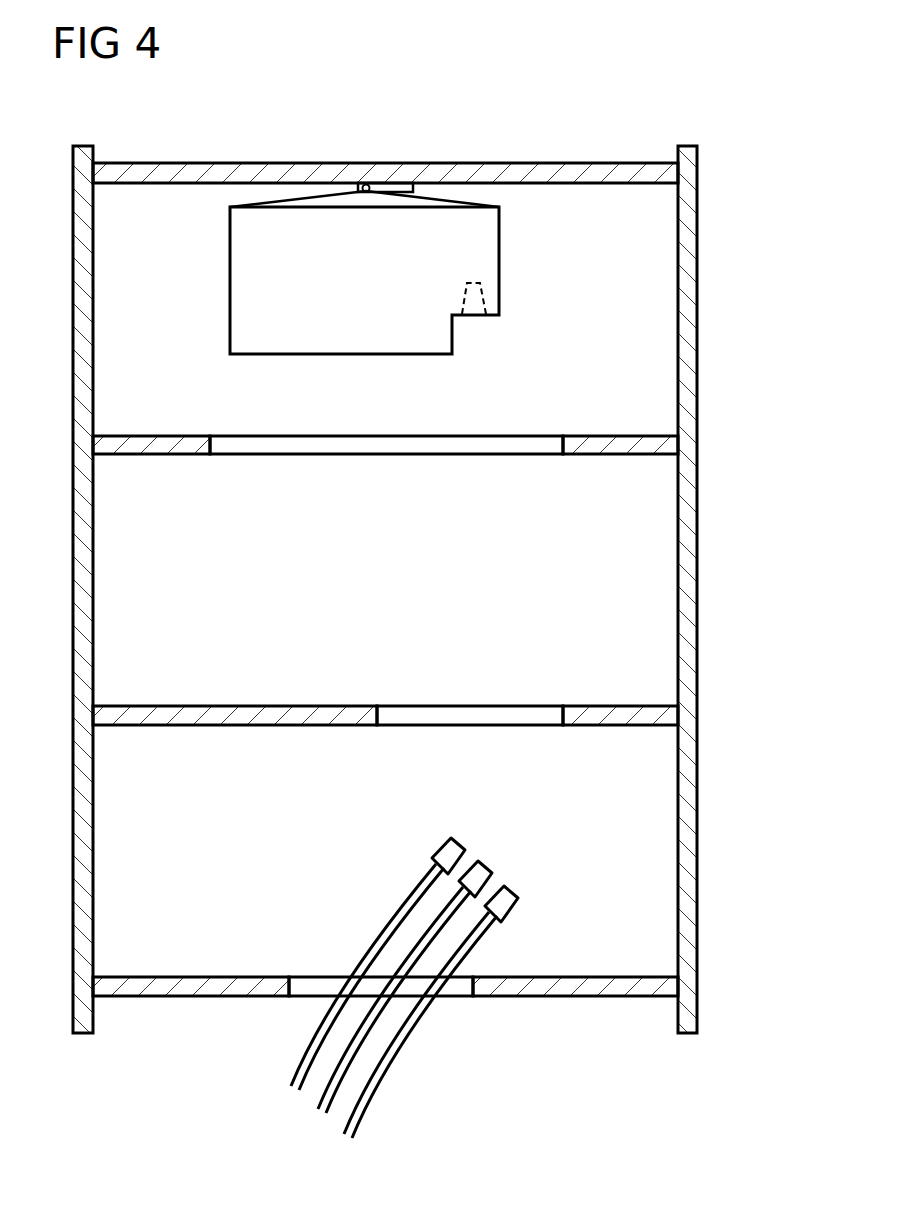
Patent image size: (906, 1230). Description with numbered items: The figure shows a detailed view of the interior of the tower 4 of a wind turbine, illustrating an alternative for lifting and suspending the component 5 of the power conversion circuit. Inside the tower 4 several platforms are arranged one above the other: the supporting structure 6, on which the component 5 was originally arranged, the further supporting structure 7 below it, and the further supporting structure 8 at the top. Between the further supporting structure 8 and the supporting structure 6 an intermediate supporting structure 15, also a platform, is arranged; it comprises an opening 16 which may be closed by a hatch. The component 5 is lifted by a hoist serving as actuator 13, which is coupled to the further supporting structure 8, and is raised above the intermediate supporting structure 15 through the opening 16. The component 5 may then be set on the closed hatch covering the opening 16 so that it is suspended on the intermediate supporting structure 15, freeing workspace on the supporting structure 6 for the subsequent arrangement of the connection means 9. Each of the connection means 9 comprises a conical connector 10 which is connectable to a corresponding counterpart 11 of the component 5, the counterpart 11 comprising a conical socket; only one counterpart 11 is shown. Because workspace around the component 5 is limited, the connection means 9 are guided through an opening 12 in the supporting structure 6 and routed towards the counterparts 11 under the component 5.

The tower 4 is at (699, 512).
The component 5 is at (500, 250).
The supporting structure 6 is at (148, 707).
The further supporting structure 7 is at (150, 980).
The further supporting structure 8 is at (149, 170).
The connection means 9 is at (398, 1040).
The conical connector 10 is at (512, 892).
The counterpart 11 is at (474, 298).
The opening 12 is at (411, 727).
The actuator 13 is at (397, 184).
The intermediate supporting structure 15 is at (626, 448).
The opening 16 is at (514, 448).